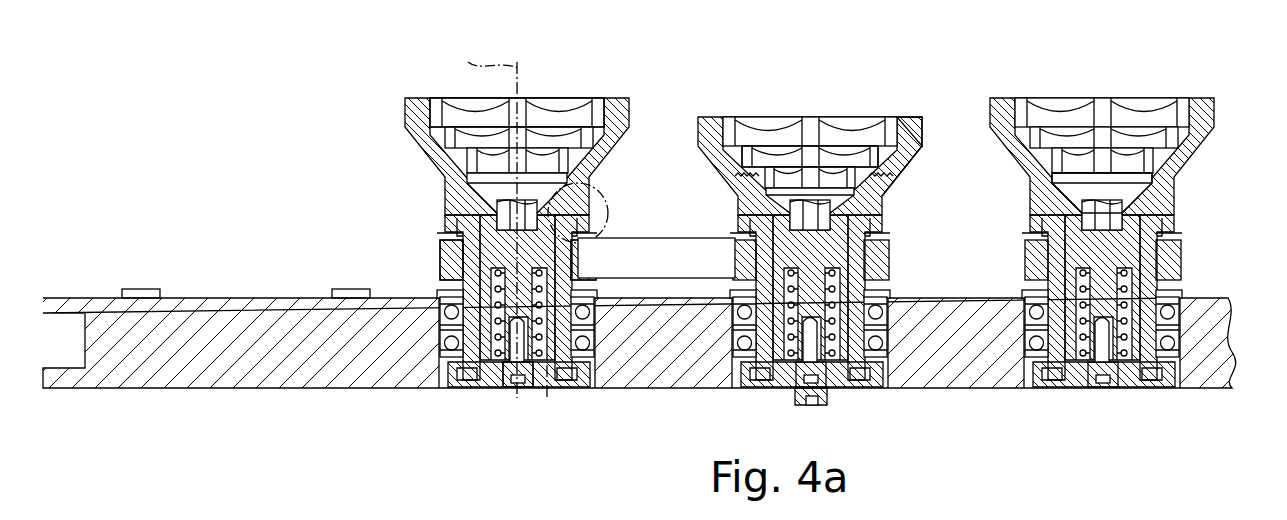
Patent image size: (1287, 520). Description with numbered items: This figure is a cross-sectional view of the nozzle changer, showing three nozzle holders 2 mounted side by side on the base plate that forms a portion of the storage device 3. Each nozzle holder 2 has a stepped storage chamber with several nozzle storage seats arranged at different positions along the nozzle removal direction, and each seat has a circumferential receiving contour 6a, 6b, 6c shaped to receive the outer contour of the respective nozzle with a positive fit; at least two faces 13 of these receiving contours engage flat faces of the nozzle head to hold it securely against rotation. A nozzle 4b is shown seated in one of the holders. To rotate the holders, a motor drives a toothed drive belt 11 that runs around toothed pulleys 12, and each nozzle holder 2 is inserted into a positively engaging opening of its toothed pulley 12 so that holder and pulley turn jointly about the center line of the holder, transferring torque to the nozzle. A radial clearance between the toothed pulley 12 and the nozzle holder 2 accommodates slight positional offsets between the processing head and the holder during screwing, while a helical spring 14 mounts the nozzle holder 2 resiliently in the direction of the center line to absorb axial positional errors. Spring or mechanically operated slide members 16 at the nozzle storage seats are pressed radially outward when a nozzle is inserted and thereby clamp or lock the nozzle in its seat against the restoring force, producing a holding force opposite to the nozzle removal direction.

The nozzle holder 2 is at (408, 82).
The storage device 3 is at (383, 370).
The toothed drive belt 11 is at (698, 262).
The toothed pulley 12 is at (457, 270).
The faces of the receiving contours 13 is at (575, 112).
The helical spring 14 is at (545, 360).
The slide member 16 is at (760, 175).
The receiving contour 6a is at (905, 122).
The receiving contour 6b is at (897, 158).
The receiving contour 6c is at (882, 186).
The nozzle 4b is at (1118, 183).